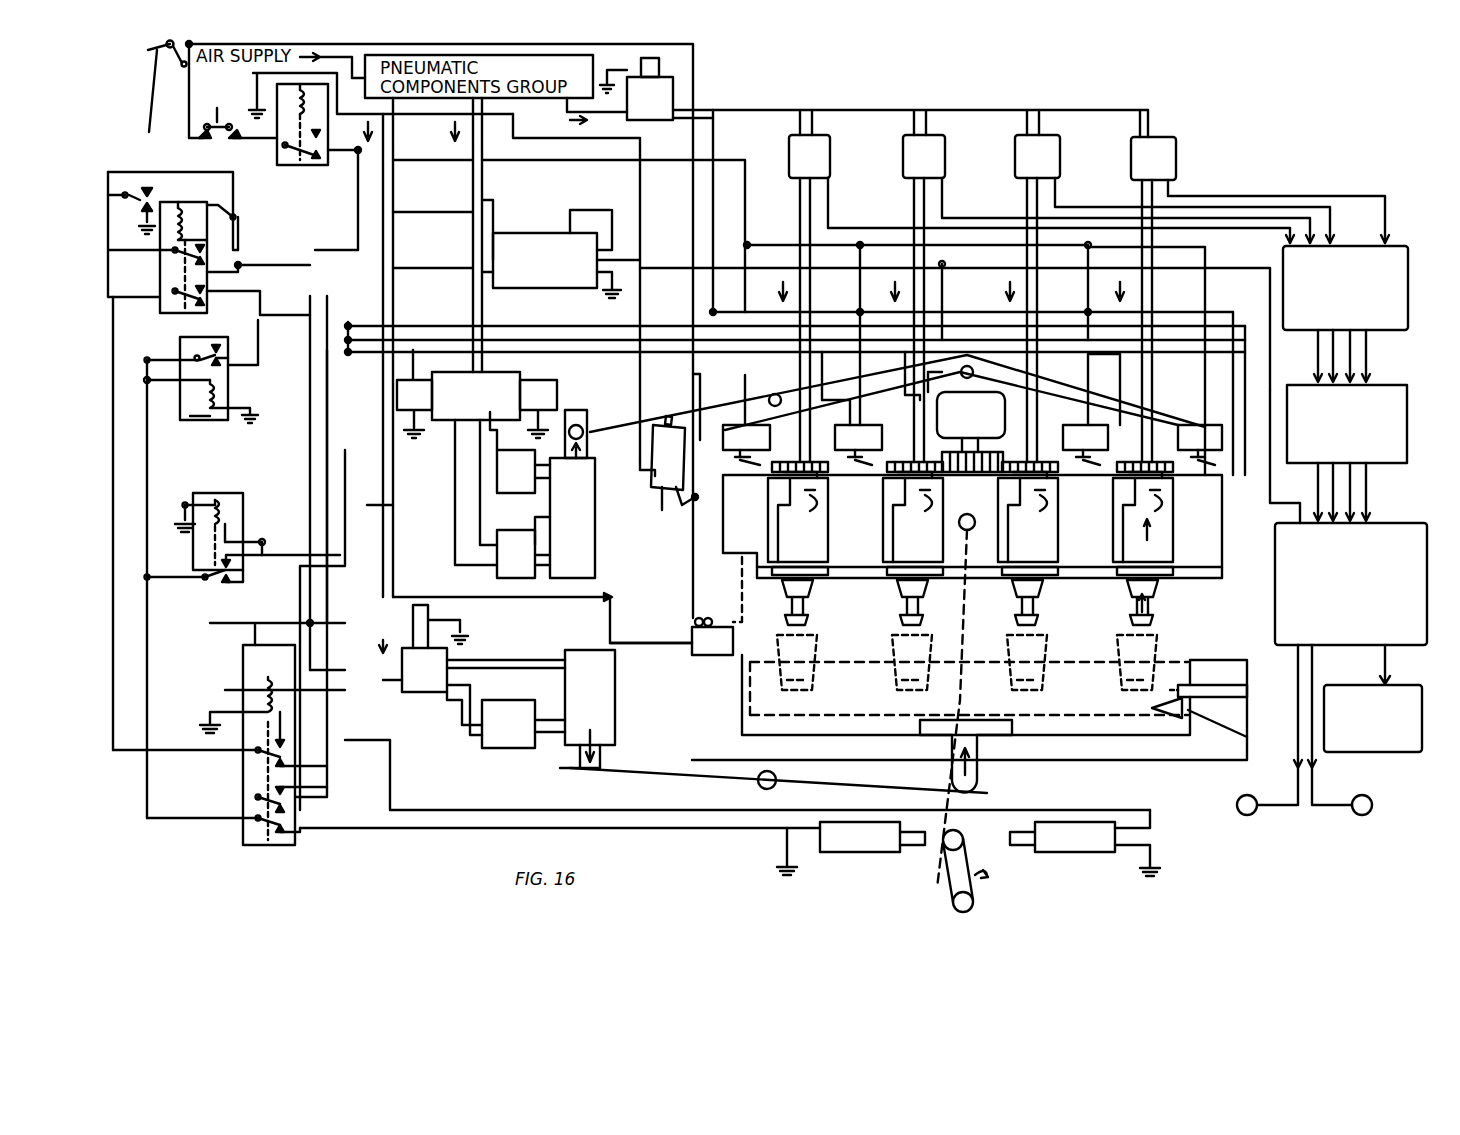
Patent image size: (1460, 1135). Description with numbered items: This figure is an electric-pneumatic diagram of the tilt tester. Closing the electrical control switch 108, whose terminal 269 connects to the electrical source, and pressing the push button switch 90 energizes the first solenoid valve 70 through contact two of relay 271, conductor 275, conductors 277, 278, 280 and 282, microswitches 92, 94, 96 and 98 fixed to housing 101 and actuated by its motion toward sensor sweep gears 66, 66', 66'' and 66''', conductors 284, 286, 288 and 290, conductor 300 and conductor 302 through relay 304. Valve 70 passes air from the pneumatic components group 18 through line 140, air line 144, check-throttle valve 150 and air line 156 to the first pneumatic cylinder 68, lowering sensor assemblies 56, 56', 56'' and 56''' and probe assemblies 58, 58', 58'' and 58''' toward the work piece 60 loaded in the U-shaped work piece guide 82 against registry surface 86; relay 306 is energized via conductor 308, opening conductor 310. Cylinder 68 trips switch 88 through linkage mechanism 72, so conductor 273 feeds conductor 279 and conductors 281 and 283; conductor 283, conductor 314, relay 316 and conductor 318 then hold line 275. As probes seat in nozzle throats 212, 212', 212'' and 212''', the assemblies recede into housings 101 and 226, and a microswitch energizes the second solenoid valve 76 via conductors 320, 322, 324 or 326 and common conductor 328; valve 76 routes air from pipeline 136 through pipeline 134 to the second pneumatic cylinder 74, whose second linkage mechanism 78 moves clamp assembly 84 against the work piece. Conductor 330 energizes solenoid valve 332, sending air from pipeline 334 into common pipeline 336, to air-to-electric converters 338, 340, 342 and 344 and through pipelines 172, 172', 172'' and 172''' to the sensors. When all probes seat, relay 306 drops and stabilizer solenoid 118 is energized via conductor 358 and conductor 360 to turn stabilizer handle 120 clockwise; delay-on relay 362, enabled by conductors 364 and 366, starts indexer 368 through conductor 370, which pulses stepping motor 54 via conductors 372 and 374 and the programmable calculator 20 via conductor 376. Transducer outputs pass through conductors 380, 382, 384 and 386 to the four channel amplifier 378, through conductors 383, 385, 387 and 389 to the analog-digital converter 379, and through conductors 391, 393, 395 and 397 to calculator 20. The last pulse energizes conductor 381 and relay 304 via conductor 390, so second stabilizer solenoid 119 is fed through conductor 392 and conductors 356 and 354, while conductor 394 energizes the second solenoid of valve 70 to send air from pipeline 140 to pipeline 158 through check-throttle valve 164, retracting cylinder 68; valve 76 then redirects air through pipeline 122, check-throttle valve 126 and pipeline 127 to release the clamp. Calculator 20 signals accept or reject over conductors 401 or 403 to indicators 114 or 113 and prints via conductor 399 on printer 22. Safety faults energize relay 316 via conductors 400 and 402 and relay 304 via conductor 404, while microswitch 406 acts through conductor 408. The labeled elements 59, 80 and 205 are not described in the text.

The electrical control switch 108 is at (165, 48).
The terminal 269 is at (155, 132).
The electrical conductor 273 is at (418, 43).
The push button switch 90 is at (216, 140).
The relay 271 is at (277, 155).
The pneumatic components group 18 is at (534, 98).
The solenoid valve 332 is at (636, 89).
The pipeline 334 is at (620, 122).
The common pipeline 336 is at (716, 106).
The conductor 330 is at (722, 132).
The air-to-electric converter 338 is at (809, 156).
The air-to-electric converter 340 is at (924, 156).
The air-to-electric converter 342 is at (1037, 156).
The air-to-electric converter 344 is at (1153, 158).
The pipeline 172 is at (785, 320).
The pipeline 172' is at (898, 320).
The pipeline 172'' is at (1011, 319).
The pipeline 172''' is at (1122, 289).
The conductor 380 is at (826, 216).
The conductor 382 is at (942, 218).
The conductor 384 is at (1054, 206).
The conductor 386 is at (1238, 198).
The 4 channel amplifier 378 is at (1410, 278).
The conductor 385 is at (1330, 345).
The conductor 383 is at (1326, 364).
The conductor 387 is at (1382, 345).
The conductor 389 is at (1385, 364).
The analog-digital converter 379 is at (1410, 418).
The conductor 391 is at (1330, 470).
The conductor 393 is at (1326, 490).
The conductor 395 is at (1375, 470).
The conductor 397 is at (1385, 490).
The programmable calculator 20 is at (1276, 585).
The conductor 399 is at (1380, 667).
The printer 22 is at (1414, 752).
The conductor 401 is at (1297, 785).
The conductor 403 is at (1313, 785).
The visual indicator 114 is at (1246, 815).
The visual indicator 113 is at (1362, 815).
The conductor 275 is at (404, 160).
The conductor 283 is at (446, 176).
The conductor 318 is at (355, 190).
The air line 140 is at (484, 190).
The conductor 381 is at (568, 205).
The conductor 281 is at (643, 210).
The pipeline 136 is at (398, 238).
The indexer 368 is at (552, 233).
The conductor 370 is at (410, 273).
The conductor 372 is at (643, 264).
The common conductor 328 is at (672, 304).
The electrical conductor 277 is at (748, 275).
The electrical conductor 278 is at (860, 275).
The conductor 376 is at (950, 268).
The conductor 374 is at (944, 278).
The electrical conductor 280 is at (1088, 291).
The electrical conductor 326 is at (1170, 312).
The electrical conductor 282 is at (1207, 288).
The electrical conductor 290 is at (1180, 327).
The conductor 400 is at (225, 190).
The switch 59 is at (137, 203).
The relay 316 is at (225, 212).
The conductor 402 is at (238, 230).
The conductor 314 is at (140, 260).
The conductor 354 is at (252, 271).
The conductor 404 is at (265, 284).
The conductor 302 is at (348, 280).
The conductor 364 is at (158, 348).
The conductor 366 is at (165, 410).
The delay-on type relay 362 is at (218, 428).
The conductor 300 is at (345, 464).
The relay 306 is at (210, 492).
The conductor 308 is at (252, 538).
The electrical conductor 310 is at (173, 575).
The conductor 390 is at (255, 623).
The conductor 356 is at (123, 758).
The conductor 358 is at (185, 826).
The relay 304 is at (278, 855).
The conductor 392 is at (343, 742).
The conductor 360 is at (450, 830).
The conductor 394 is at (415, 597).
The first solenoid valve 70 is at (477, 394).
The air line 144 is at (450, 458).
The pipeline 158 is at (490, 438).
The check-throttle valve 164 is at (520, 452).
The air line 156 is at (535, 517).
The check-throttle valve 150 is at (523, 554).
The first pneumatic cylinder 68 is at (572, 518).
The linkage mechanism 72 is at (650, 418).
The switch 88 is at (656, 489).
The conductor 279 is at (680, 515).
The electrical conductor 284 is at (688, 355).
The electrical conductor 286 is at (765, 342).
The electrical conductor 320 is at (706, 384).
The electrical conductor 322 is at (824, 387).
The electrical conductor 288 is at (886, 342).
The electrical conductor 324 is at (1088, 354).
The stepping motor 54 is at (963, 392).
The microswitch 92 is at (735, 446).
The microswitch 94 is at (847, 446).
The microswitch 96 is at (1105, 445).
The microswitch 98 is at (1220, 445).
The sensor housing 226 is at (1222, 527).
The sensor housing 101 is at (1180, 567).
The sensor sweep gear 66 is at (779, 467).
The sensor sweep gear 66' is at (897, 467).
The sensor sweep gear 66'' is at (1054, 467).
The sensor sweep gear 66''' is at (1169, 467).
The sensor assembly 56 is at (798, 523).
The sensor assembly 56' is at (913, 523).
The sensor assembly 56'' is at (1028, 523).
The sensor assembly 56''' is at (1143, 523).
The probe assembly 58 is at (809, 602).
The probe assembly 58' is at (925, 602).
The probe assembly 58'' is at (1043, 602).
The probe assembly 58''' is at (1163, 602).
The nozzle throat 212 is at (817, 661).
The nozzle throat 212' is at (943, 661).
The nozzle throat 212'' is at (1053, 655).
The nozzle throat 212''' is at (1165, 661).
The work piece 60 is at (1080, 656).
The carriage 80 is at (1235, 655).
The U-shaped work piece guide 82 is at (1230, 690).
The registry surface 86 is at (1188, 708).
The link 205 is at (1236, 728).
The clamp assembly 84 is at (977, 777).
The microswitch 406 is at (697, 612).
The conductor 408 is at (612, 630).
The second solenoid valve 76 is at (423, 648).
The pipeline 122 is at (450, 715).
The check-throttle valve 126 is at (523, 724).
The pipeline 134 is at (510, 658).
The second pneumatic cylinder 74 is at (590, 709).
The pipeline 127 is at (552, 755).
The second linkage mechanism 78 is at (646, 770).
The stabilizer solenoid 118 is at (851, 848).
The second stabilizer solenoid 119 is at (1085, 843).
The stabilizer handle 120 is at (972, 890).